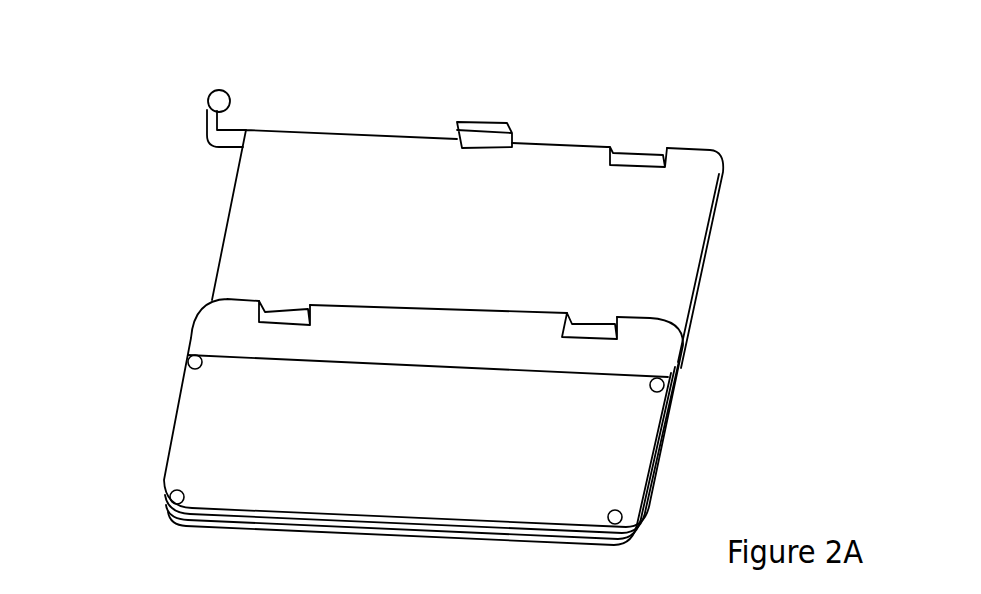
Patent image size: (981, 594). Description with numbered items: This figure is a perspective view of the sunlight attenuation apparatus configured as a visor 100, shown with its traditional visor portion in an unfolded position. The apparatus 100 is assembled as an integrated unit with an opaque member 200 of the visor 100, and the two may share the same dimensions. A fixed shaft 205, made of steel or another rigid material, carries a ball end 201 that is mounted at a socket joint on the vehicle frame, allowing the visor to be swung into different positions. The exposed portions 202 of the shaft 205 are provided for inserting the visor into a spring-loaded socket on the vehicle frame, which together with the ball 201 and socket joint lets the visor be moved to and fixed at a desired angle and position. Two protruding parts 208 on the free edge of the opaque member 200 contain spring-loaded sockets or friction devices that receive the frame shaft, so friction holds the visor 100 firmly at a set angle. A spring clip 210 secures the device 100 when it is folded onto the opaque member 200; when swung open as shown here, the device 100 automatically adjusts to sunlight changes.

The visor 100 is at (247, 443).
The opaque member 200 is at (232, 200).
The ball end 201 is at (210, 90).
The exposed portions 202 is at (640, 148).
The fixed shaft 205 is at (233, 130).
The protruding parts 208 is at (298, 311).
The spring clip 210 is at (480, 120).